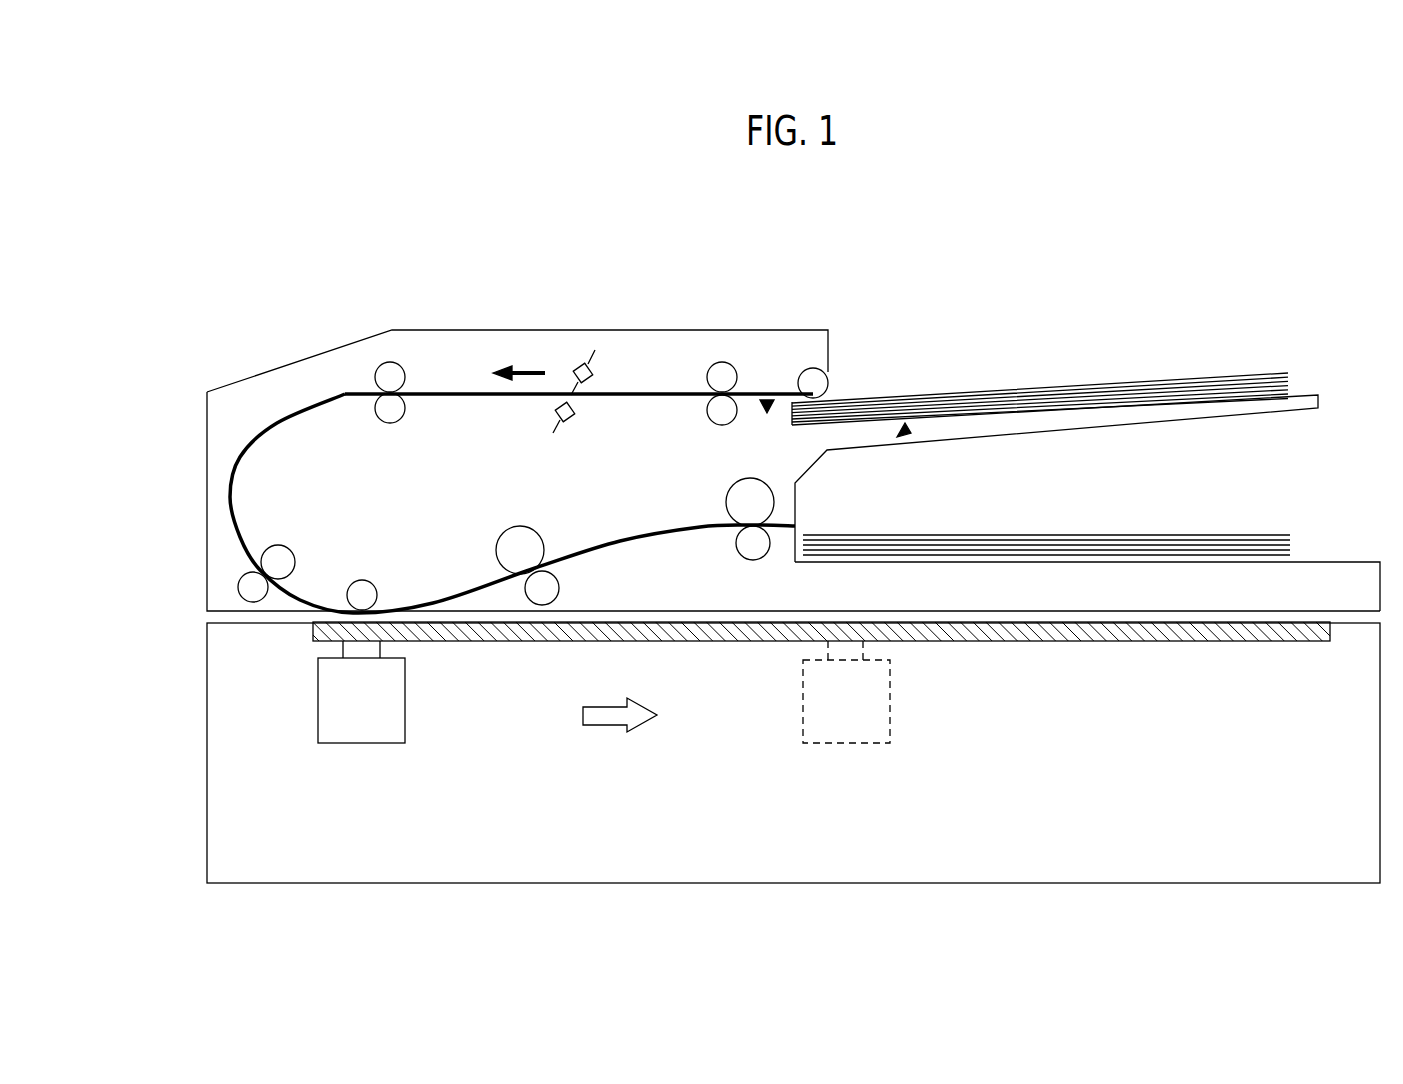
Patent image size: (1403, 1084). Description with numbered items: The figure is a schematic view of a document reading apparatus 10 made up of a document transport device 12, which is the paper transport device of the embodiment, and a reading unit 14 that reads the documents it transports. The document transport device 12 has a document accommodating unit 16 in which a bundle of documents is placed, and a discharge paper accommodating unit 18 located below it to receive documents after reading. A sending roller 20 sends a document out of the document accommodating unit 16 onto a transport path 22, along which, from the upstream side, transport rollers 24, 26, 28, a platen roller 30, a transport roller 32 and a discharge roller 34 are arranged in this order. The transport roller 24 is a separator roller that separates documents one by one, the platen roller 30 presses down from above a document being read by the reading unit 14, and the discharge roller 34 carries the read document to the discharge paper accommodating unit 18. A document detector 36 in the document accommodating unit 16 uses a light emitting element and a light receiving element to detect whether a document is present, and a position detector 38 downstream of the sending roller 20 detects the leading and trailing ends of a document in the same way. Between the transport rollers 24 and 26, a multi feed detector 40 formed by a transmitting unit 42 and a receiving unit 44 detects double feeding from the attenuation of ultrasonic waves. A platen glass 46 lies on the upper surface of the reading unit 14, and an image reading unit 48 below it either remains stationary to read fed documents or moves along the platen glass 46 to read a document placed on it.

The document reading apparatus 10 is at (1240, 315).
The document transport device 12 is at (204, 505).
The reading unit 14 is at (204, 710).
The document accommodating unit 16 is at (1147, 425).
The discharge paper accommodating unit 18 is at (1345, 560).
The sending roller 20 is at (826, 377).
The transport path 22 is at (448, 396).
The transport roller 24 is at (722, 368).
The transport roller 26 is at (390, 368).
The transport roller 28 is at (280, 556).
The platen roller 30 is at (364, 585).
The transport roller 32 is at (512, 530).
The discharge roller 34 is at (735, 498).
The document detector 36 is at (903, 428).
The position detector 38 is at (767, 402).
The multi feed detector 40 is at (560, 362).
The transmitting unit 42 is at (593, 377).
The receiving unit 44 is at (572, 420).
The platen glass 46 is at (1003, 643).
The image reading unit 48 is at (405, 710).